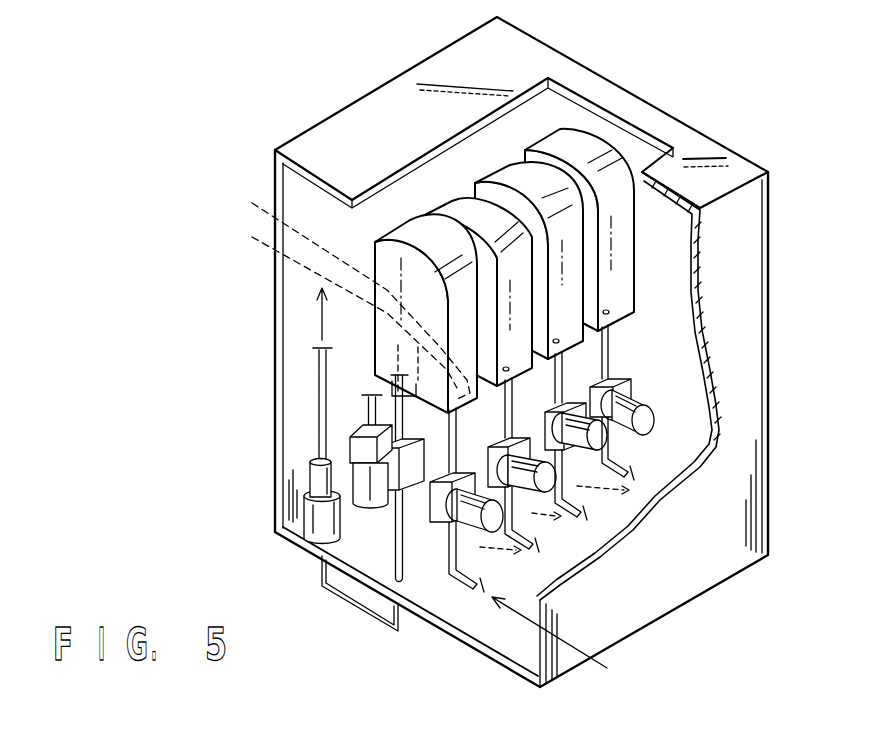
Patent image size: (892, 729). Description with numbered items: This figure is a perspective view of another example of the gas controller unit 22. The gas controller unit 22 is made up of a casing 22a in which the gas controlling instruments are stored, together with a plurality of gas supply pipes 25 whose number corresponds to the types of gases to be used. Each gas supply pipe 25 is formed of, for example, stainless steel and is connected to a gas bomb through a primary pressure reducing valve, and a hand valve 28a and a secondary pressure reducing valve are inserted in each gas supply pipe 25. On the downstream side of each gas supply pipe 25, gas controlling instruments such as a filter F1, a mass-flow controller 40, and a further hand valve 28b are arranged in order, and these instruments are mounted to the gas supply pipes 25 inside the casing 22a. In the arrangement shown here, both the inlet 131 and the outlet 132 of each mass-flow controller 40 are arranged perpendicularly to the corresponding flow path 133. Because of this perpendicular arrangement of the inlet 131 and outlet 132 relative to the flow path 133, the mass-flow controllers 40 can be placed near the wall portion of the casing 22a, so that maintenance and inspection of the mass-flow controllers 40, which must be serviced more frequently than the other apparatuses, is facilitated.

The gas controller unit 22 is at (624, 74).
The casing 22a is at (722, 161).
The mass-flow controller 40 is at (560, 142).
The inlet 131 is at (340, 293).
The flow path 133 is at (333, 303).
The outlet 132 is at (380, 375).
The gas supply pipe 25 is at (445, 412).
The hand valve 28a is at (389, 490).
The hand valve 28b is at (598, 450).
The filter F1 is at (376, 505).